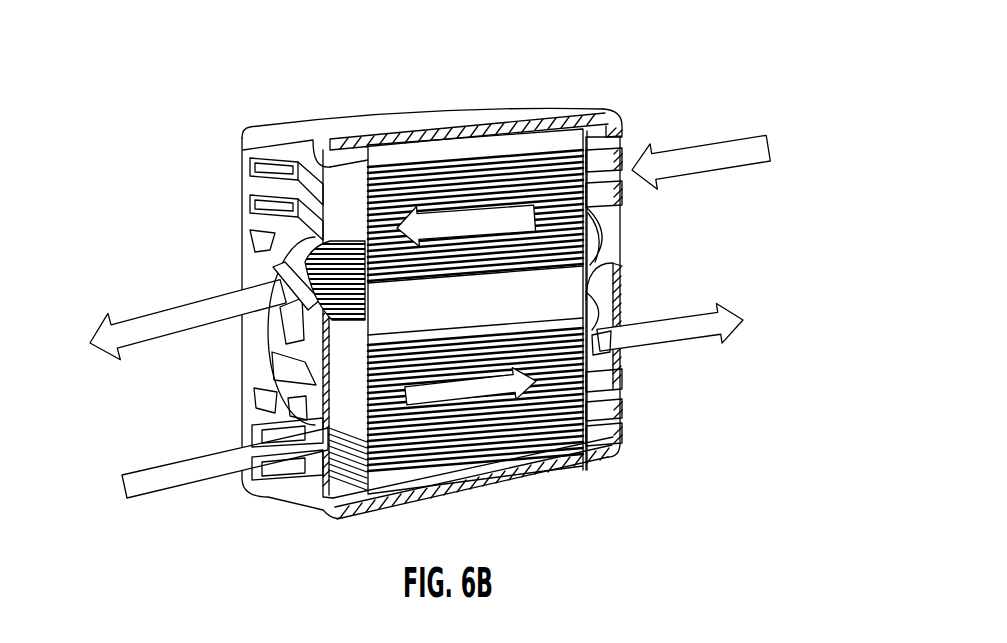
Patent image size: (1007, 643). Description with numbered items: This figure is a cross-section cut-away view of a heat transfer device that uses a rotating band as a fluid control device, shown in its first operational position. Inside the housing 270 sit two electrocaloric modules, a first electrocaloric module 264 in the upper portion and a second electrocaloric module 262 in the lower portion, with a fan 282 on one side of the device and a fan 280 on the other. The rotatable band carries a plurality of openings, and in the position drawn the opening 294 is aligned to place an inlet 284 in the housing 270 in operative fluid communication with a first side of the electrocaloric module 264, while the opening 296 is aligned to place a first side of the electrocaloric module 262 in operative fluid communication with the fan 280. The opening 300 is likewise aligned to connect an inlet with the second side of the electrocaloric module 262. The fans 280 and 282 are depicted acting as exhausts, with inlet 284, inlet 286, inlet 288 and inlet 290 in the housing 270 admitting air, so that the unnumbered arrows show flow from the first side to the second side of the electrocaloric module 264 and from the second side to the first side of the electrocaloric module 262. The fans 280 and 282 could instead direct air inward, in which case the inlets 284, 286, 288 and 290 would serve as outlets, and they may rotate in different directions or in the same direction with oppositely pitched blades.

The electrocaloric module 262 is at (490, 425).
The electrocaloric module 264 is at (457, 222).
The housing 270 is at (402, 113).
The fan 280 is at (606, 291).
The fan 282 is at (298, 334).
The inlet 284 is at (605, 143).
The inlet 286 is at (607, 422).
The inlet 288 is at (267, 205).
The inlet 290 is at (262, 445).
The opening 294 is at (620, 182).
The opening 296 is at (622, 348).
The opening 300 is at (312, 443).